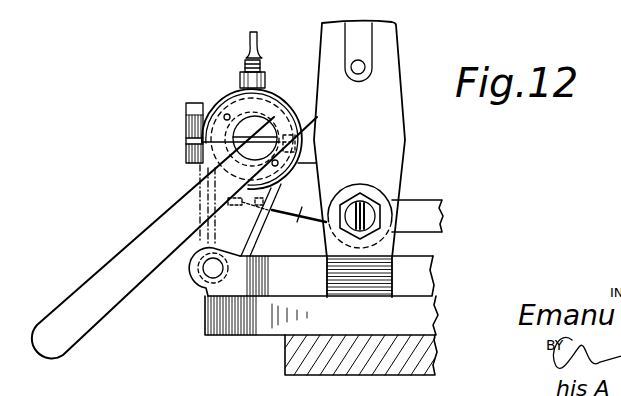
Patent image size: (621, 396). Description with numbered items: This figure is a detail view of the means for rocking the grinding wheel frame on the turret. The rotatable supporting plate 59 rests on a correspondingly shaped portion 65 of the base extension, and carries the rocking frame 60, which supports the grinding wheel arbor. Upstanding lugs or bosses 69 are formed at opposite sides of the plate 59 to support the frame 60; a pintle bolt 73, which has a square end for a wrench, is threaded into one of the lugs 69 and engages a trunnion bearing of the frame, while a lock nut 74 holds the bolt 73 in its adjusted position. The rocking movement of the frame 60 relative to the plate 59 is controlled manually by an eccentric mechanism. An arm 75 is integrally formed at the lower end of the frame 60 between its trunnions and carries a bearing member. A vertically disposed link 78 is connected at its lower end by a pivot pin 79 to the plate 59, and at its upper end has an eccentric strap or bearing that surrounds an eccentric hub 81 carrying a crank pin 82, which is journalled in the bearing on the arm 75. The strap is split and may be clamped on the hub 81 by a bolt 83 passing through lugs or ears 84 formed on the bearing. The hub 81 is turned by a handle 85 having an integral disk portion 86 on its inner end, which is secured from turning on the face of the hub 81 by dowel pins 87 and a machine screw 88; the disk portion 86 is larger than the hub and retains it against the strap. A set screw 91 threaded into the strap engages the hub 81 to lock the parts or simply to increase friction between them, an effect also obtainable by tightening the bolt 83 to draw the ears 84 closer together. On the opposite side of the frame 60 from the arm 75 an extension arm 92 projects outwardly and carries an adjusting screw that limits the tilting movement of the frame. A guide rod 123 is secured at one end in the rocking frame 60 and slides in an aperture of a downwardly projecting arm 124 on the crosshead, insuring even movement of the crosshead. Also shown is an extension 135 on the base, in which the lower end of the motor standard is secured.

The rocking frame 60 is at (403, 51).
The downwardly projecting arm 124 is at (358, 34).
The rod 123 is at (360, 75).
The disk portion 86 is at (290, 80).
The crank pin 82 is at (208, 178).
The eccentric hub 81 is at (310, 119).
The machine screw 88 is at (252, 127).
The dowel pins 87 is at (187, 120).
The bolt 83 is at (191, 104).
The lugs or ears 84 is at (187, 146).
The set screw 91 is at (247, 43).
The handle 85 is at (128, 236).
The link 78 is at (240, 210).
The pivot pin 79 is at (213, 268).
The arm 75 is at (299, 228).
The lugs or bosses 69 is at (382, 176).
The lock nut 74 is at (353, 205).
The pintle bolt 73 is at (368, 213).
The extension arm 92 is at (432, 197).
The rotatable supporting plate 59 is at (432, 270).
The portion of the base extension 65 is at (425, 310).
The extension on base 135 is at (266, 373).